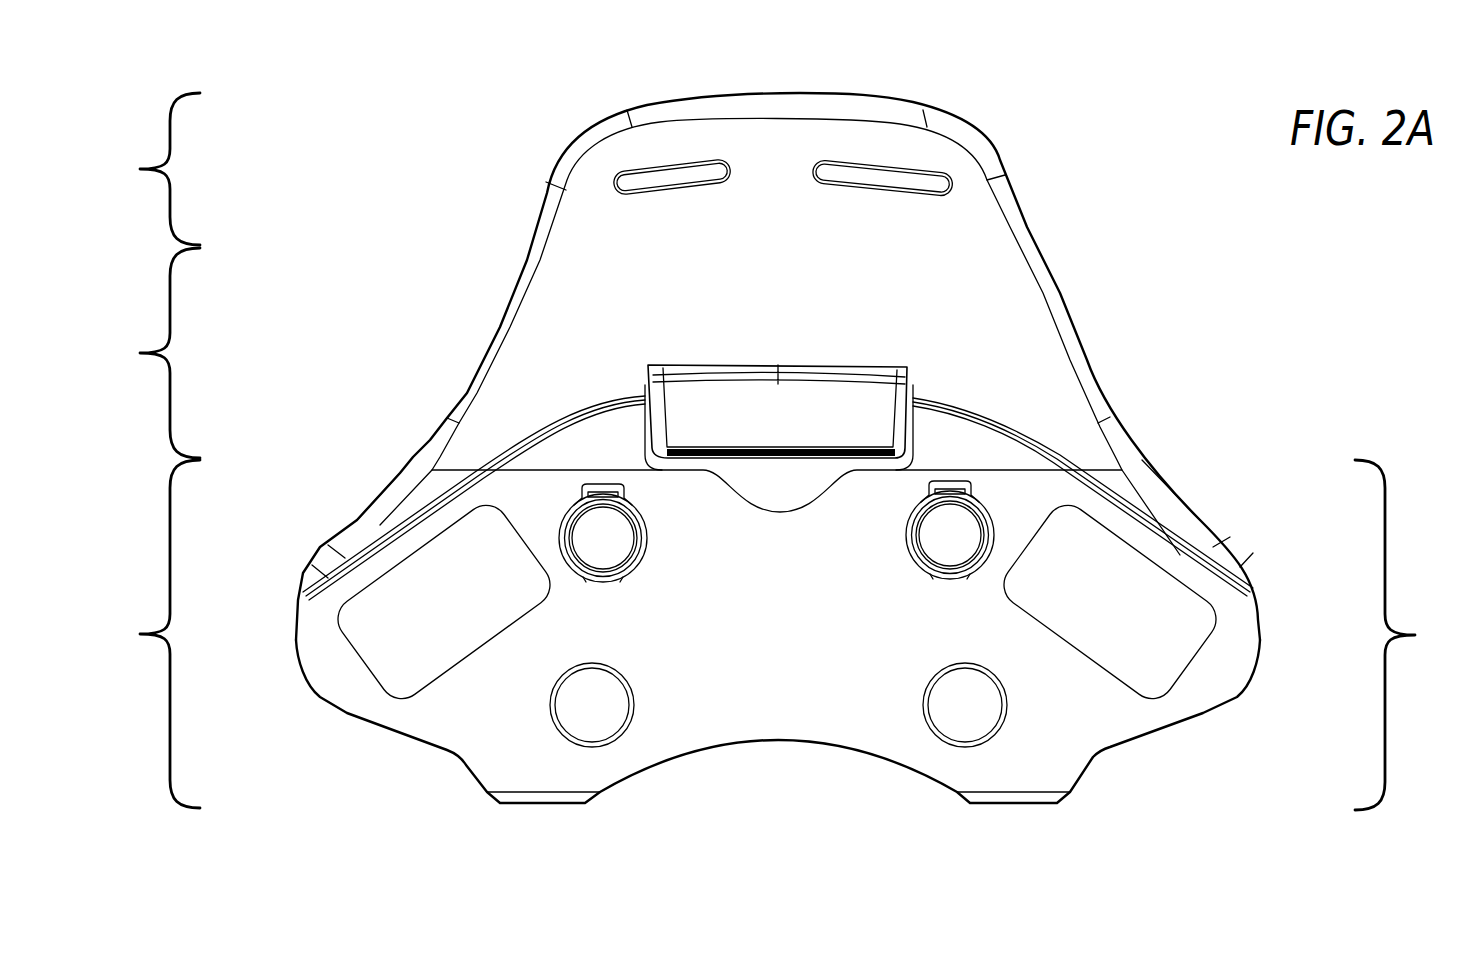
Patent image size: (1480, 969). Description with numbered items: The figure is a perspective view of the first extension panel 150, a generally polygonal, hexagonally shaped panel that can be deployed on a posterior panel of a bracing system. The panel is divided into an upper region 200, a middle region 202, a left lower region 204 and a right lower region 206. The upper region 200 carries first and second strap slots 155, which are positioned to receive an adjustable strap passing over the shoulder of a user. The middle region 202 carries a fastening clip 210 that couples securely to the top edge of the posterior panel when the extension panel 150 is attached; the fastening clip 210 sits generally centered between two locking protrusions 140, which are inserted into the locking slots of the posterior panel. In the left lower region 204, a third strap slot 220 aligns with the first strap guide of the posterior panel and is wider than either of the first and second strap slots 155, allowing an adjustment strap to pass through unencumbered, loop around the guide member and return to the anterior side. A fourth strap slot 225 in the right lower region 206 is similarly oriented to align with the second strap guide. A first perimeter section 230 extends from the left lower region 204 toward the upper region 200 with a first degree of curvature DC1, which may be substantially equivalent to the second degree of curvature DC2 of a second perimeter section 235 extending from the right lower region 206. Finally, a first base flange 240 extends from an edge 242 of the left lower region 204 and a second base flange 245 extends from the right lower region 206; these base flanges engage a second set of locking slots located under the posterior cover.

The first extension panel 150 is at (1066, 247).
The first and second strap slots 155 is at (668, 172).
The fastening clip 210 is at (850, 412).
The locking protrusions 140 is at (615, 537).
The third strap slot 220 is at (487, 613).
The fourth strap slot 225 is at (1062, 598).
The first perimeter section 230 is at (352, 520).
The second perimeter section 235 is at (1200, 520).
The first base flange 240 is at (565, 792).
The second base flange 245 is at (1017, 795).
The edge 242 is at (518, 803).
The upper region 200 is at (146, 169).
The middle region 202 is at (146, 353).
The left lower region 204 is at (146, 634).
The right lower region 206 is at (1407, 635).
The first degree of curvature DC1 is at (367, 497).
The second degree of curvature DC2 is at (1192, 498).